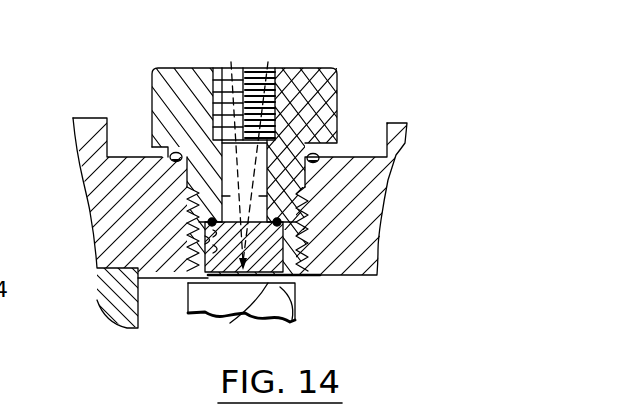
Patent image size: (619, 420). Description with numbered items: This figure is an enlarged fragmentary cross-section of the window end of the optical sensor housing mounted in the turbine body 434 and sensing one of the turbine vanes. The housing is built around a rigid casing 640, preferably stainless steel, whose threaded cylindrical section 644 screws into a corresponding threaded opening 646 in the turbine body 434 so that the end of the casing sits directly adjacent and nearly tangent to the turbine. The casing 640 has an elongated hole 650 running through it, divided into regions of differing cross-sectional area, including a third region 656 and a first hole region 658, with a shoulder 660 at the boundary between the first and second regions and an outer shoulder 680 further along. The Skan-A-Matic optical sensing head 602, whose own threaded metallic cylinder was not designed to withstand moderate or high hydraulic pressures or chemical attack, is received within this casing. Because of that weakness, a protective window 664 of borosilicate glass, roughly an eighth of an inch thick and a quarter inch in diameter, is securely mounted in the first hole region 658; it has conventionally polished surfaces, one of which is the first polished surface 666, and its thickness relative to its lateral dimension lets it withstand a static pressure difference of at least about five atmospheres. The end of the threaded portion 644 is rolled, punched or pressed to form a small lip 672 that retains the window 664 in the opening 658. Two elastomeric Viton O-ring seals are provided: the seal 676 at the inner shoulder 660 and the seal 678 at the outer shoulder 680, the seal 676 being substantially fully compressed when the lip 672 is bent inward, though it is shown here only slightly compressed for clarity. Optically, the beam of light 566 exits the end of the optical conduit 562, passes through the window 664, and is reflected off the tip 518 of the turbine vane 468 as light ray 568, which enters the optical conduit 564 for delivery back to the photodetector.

The turbine body 434 is at (66, 125).
The rigid casing 640 is at (165, 70).
The optical fiber 566 is at (210, 117).
The threaded opening 646 is at (264, 66).
The shoulder 660 is at (292, 203).
The elongated hole 650 is at (224, 75).
The third region 656 is at (213, 105).
The first hole region 658 is at (213, 240).
The elastomeric seal 678 is at (320, 160).
The optical conduit 562 is at (231, 62).
The optical conduit 564 is at (268, 62).
The optical sensing head 602 is at (245, 52).
The threaded cylindrical section 644 is at (200, 182).
The optical fiber 568 is at (338, 74).
The outer shoulder 680 is at (333, 140).
The elastomeric seal 676 is at (286, 222).
The turbine vane 468 is at (286, 322).
The first polished surface 666 is at (272, 285).
The lip 672 is at (297, 292).
The protective window 664 is at (212, 290).
The tip 518 is at (255, 286).